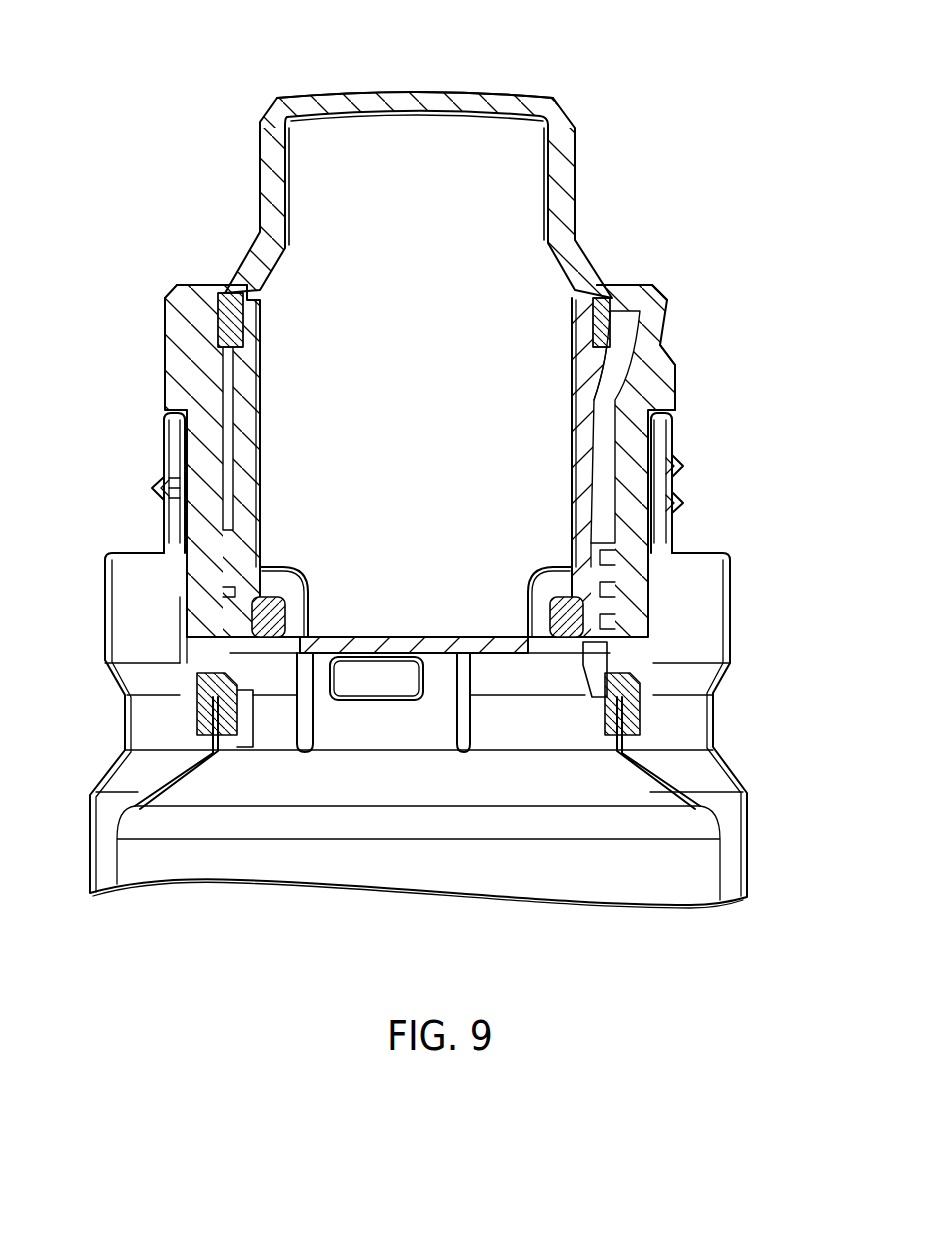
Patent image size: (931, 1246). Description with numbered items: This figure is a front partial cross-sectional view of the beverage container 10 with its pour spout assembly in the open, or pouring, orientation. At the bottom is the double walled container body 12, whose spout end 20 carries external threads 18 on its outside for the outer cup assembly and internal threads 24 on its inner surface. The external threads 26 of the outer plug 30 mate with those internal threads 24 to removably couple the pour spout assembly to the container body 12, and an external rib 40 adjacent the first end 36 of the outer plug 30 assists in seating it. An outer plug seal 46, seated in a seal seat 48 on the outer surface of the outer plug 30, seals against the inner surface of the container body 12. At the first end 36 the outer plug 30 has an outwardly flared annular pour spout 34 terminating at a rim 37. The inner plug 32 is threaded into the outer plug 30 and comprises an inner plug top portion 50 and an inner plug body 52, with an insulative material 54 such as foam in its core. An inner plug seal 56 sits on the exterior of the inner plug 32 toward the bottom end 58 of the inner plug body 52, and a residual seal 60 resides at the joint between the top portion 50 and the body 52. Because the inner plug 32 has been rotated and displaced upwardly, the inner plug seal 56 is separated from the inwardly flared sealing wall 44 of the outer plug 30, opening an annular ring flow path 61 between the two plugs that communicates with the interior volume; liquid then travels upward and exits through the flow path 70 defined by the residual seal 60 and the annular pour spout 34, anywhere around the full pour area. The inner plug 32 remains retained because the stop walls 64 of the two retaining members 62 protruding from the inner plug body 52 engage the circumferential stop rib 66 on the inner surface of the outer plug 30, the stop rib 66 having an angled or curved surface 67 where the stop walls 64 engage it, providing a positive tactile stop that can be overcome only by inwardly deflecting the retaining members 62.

The beverage container 10 is at (150, 90).
The container body 12 is at (750, 860).
The external threads 18 is at (684, 471).
The spout end 20 is at (143, 553).
The internal threads 24 is at (620, 645).
The external threads 26 is at (275, 592).
The outer plug 30 is at (192, 346).
The inner plug 32 is at (533, 97).
The annular pour spout 34 is at (198, 292).
The first end 36 is at (648, 353).
The rim 37 is at (628, 285).
The external rib 40 is at (676, 392).
The sealing wall 44 is at (603, 668).
The outer plug seal 46 is at (622, 720).
The seal seat 48 is at (258, 668).
The inner plug top portion 50 is at (578, 160).
The inner plug body 52 is at (672, 506).
The insulative material 54 is at (445, 227).
The inner plug seal 56 is at (207, 698).
The bottom end 58 is at (240, 582).
The residual seal 60 is at (228, 308).
The annular ring flow path 61 is at (584, 652).
The retaining members 62 is at (372, 712).
The stop walls 64 is at (287, 705).
The stop rib 66 is at (627, 700).
The angled or curved surface 67 is at (262, 690).
The flow path 70 is at (618, 328).